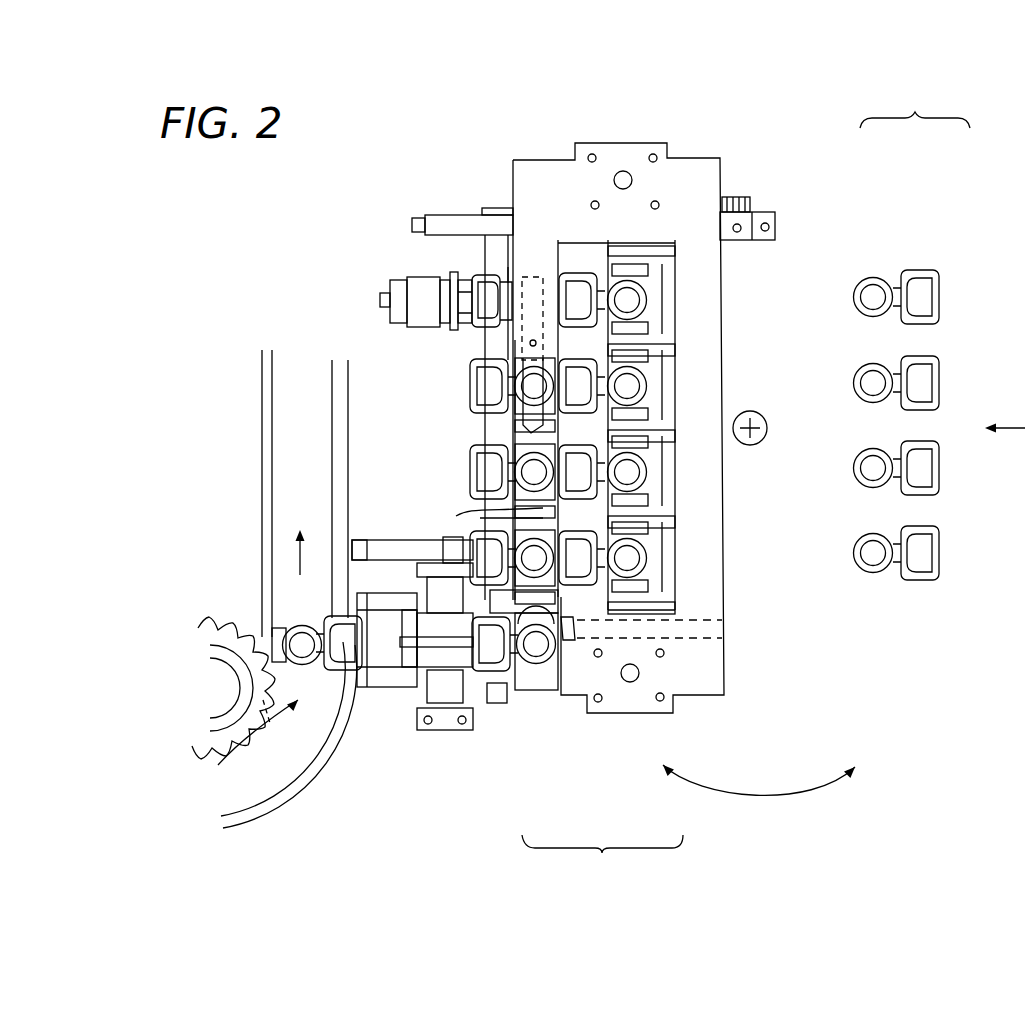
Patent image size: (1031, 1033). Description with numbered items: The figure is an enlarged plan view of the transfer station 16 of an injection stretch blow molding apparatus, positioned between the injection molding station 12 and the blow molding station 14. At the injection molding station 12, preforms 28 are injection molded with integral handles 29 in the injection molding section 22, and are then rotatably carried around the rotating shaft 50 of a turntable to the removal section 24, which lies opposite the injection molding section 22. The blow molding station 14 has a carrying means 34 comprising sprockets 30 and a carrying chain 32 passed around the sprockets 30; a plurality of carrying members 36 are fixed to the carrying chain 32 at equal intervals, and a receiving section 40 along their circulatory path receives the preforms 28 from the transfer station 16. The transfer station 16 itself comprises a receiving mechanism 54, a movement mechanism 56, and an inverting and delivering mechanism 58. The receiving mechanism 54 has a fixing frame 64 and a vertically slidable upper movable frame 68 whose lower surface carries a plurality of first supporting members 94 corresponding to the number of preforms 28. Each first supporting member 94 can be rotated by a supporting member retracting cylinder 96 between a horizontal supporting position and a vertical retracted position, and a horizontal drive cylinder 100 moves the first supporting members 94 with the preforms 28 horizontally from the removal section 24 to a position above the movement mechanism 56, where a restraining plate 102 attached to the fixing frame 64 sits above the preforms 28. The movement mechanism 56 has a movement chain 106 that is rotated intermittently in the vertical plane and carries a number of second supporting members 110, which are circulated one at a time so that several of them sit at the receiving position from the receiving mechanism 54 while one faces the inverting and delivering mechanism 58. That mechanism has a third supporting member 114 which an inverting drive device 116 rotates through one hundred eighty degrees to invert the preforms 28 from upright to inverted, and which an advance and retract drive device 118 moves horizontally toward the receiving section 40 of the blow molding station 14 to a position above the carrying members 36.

The injection molding station 12 is at (915, 107).
The blow molding station 14 is at (157, 305).
The transfer station 16 is at (602, 861).
The injection molding section 22 is at (900, 235).
The removal section 24 is at (648, 135).
The preform 28 is at (646, 298).
The handle 29 is at (587, 283).
The sprocket 30 is at (212, 618).
The carrying chain 32 is at (210, 760).
The carrying means 34 is at (325, 787).
The carrying member 36 is at (280, 633).
The receiving section 40 is at (307, 593).
The rotating shaft 50 is at (767, 438).
The receiving mechanism 54 is at (692, 705).
The movement mechanism 56 is at (517, 703).
The inverting and delivering mechanism 58 is at (462, 740).
The fixing frame 64 is at (703, 168).
The upper movable frame 68 is at (713, 588).
The first supporting member 94 is at (648, 330).
The supporting member retracting cylinder 96 is at (773, 220).
The horizontal drive cylinder 100 is at (447, 216).
The restraining plate 102 is at (533, 277).
The movement chain 106 is at (478, 521).
The second supporting member 110 is at (480, 437).
The third supporting member 114 is at (572, 687).
The inverting drive device 116 is at (440, 732).
The advance and retract drive device 118 is at (375, 550).